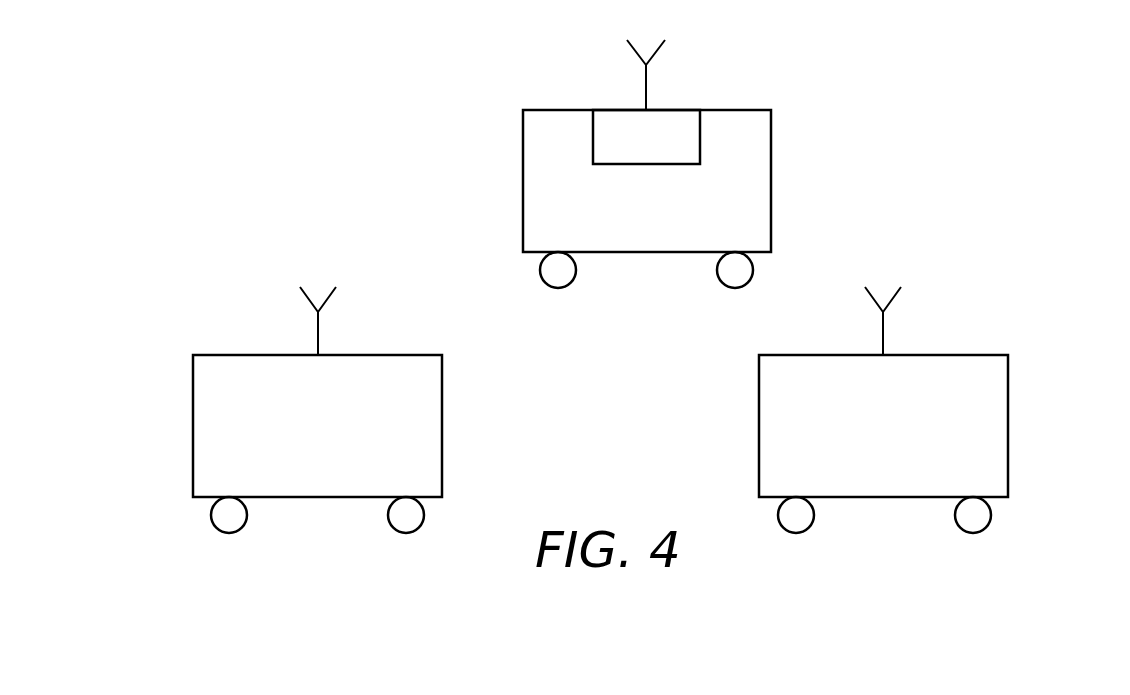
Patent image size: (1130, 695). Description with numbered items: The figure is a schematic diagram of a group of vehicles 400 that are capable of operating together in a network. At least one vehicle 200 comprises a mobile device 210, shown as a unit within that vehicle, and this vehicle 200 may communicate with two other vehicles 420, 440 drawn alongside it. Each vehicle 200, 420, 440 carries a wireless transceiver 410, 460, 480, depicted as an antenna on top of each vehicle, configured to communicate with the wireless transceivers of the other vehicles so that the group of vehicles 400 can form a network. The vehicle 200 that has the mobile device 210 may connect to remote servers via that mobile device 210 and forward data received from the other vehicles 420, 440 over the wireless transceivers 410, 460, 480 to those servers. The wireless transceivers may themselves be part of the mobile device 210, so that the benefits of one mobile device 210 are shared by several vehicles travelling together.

The group of vehicles 400 is at (1015, 121).
The vehicle 200 is at (784, 123).
The mobile device 210 is at (606, 113).
The wireless transceiver 410 is at (660, 51).
The vehicle 420 is at (180, 368).
The wireless transceiver 460 is at (332, 296).
The vehicle 440 is at (1023, 368).
The wireless transceiver 480 is at (898, 296).